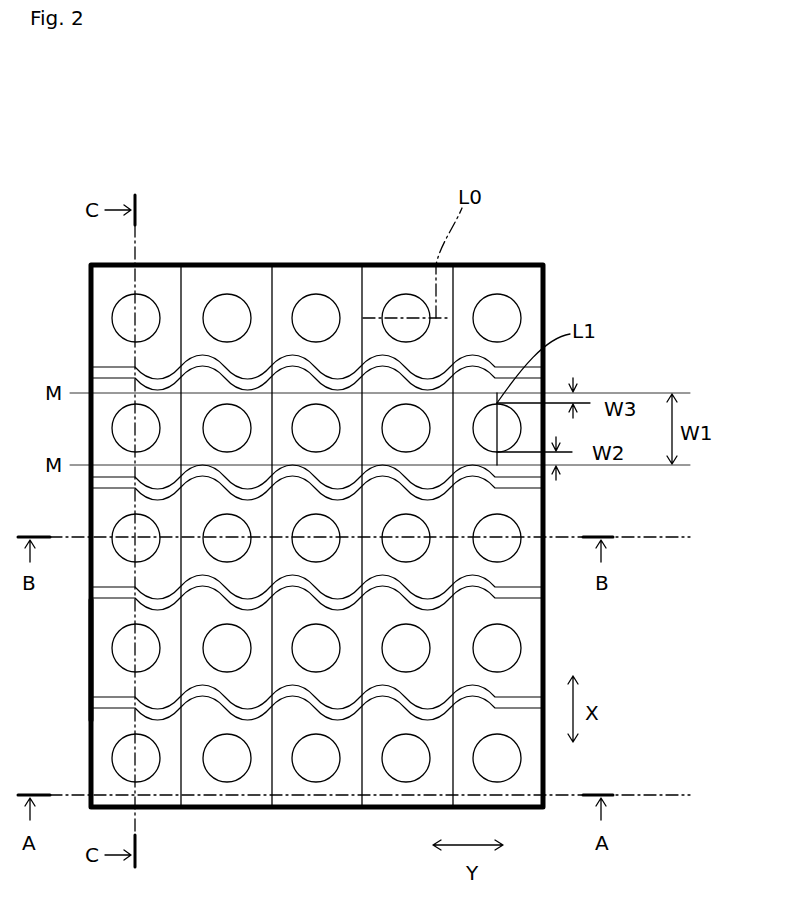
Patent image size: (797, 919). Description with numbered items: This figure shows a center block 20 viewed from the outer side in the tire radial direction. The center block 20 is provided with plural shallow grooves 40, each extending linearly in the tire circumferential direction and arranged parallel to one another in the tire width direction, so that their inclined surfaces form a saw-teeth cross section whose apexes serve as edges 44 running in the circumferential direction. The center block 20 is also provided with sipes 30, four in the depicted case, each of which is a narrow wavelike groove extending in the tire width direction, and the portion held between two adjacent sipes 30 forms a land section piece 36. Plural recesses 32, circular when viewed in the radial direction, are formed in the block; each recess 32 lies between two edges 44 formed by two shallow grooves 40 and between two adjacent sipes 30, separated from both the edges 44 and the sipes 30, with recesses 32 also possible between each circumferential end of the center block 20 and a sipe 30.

The center block 20 is at (341, 264).
The sipe 30 is at (114, 598).
The recess 32 is at (406, 305).
The land section piece 36 is at (98, 664).
The shallow groove 40 is at (170, 292).
The edge 44 is at (181, 278).